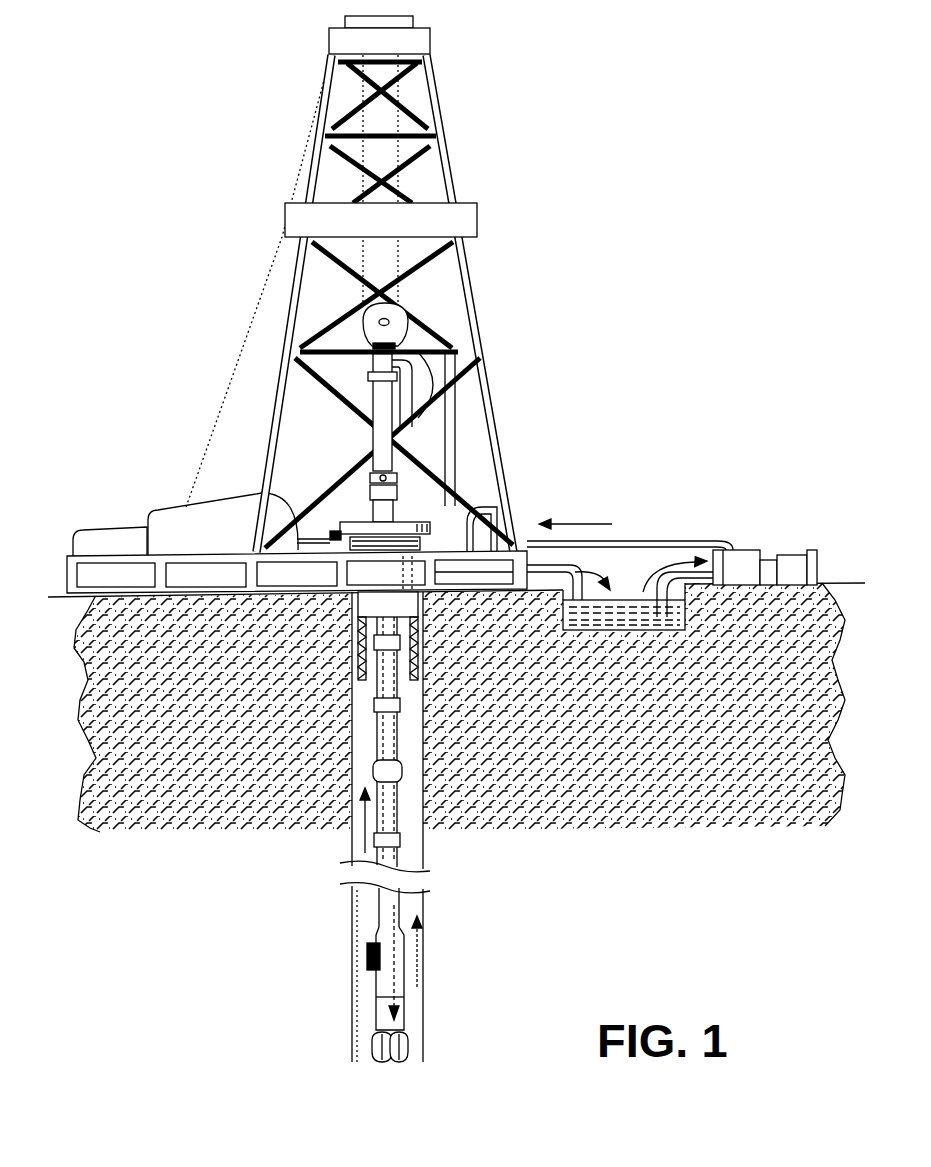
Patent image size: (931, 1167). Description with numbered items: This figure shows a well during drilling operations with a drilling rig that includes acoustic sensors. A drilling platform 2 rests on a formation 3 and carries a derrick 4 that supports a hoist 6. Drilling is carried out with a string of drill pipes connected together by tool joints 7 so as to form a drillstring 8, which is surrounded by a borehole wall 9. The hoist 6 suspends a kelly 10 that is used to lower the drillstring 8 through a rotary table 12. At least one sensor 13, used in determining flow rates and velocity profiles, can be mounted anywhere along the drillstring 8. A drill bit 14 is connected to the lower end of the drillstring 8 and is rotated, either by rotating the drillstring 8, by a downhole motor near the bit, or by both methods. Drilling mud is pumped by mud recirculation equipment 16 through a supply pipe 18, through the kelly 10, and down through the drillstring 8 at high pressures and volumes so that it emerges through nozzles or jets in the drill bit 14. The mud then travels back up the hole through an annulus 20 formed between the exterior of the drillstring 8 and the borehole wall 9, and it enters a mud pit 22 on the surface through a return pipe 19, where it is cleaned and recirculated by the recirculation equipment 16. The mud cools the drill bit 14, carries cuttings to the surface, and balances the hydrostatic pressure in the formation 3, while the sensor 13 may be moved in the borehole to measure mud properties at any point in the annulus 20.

The drilling platform 2 is at (67, 560).
The formation 3 is at (80, 690).
The derrick 4 is at (448, 168).
The hoist 6 is at (403, 318).
The tool joints 7 is at (377, 713).
The drillstring 8 is at (377, 738).
The borehole wall 9 is at (352, 855).
The kelly 10 is at (383, 398).
The rotary table 12 is at (413, 519).
The sensor 13 is at (366, 957).
The drill bit 14 is at (408, 1035).
The mud recirculation equipment 16 is at (733, 557).
The supply pipe 18 is at (598, 537).
The return pipe 19 is at (563, 600).
The annulus 20 is at (410, 752).
The mud pit 22 is at (630, 618).